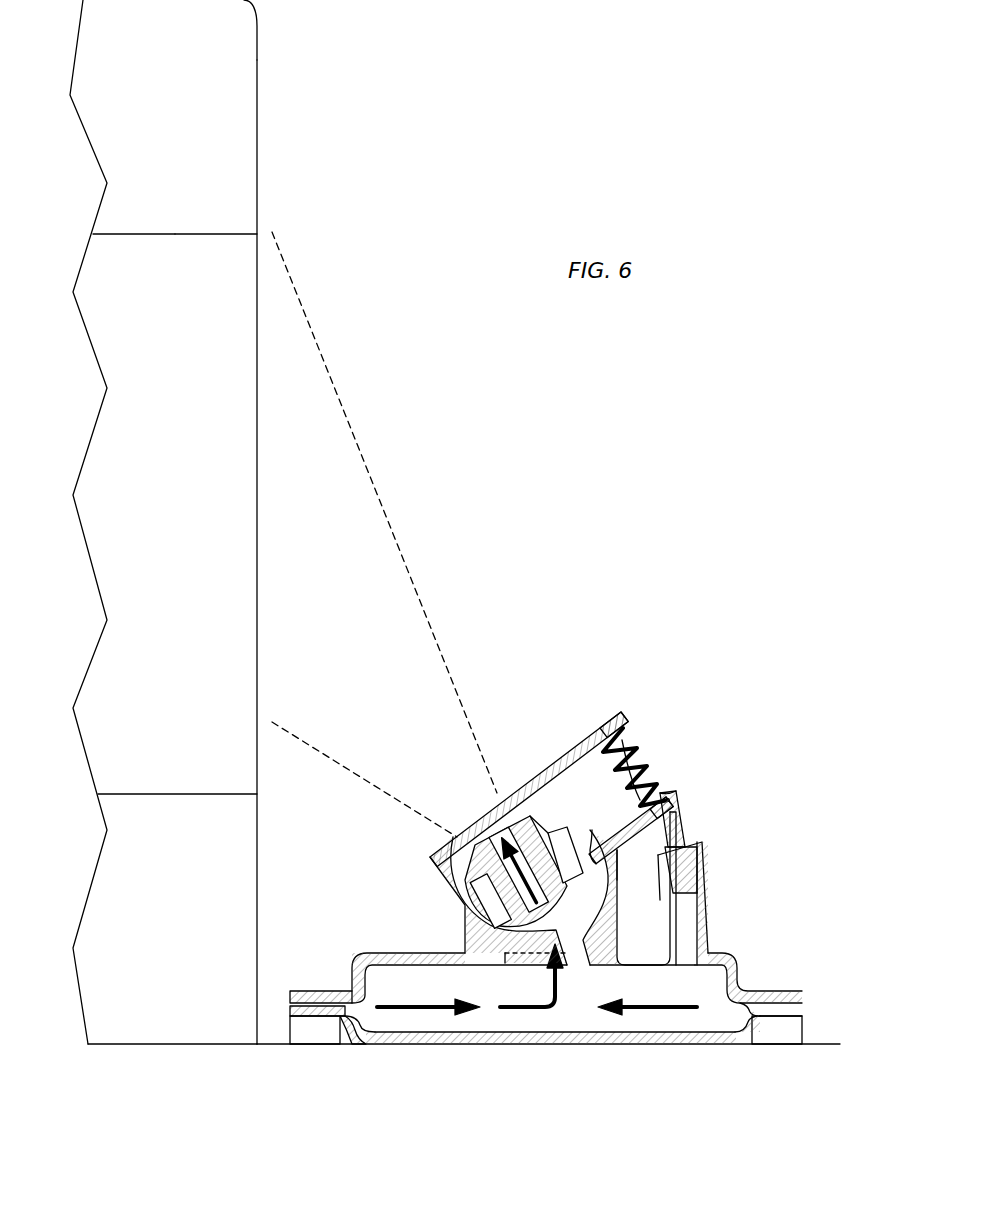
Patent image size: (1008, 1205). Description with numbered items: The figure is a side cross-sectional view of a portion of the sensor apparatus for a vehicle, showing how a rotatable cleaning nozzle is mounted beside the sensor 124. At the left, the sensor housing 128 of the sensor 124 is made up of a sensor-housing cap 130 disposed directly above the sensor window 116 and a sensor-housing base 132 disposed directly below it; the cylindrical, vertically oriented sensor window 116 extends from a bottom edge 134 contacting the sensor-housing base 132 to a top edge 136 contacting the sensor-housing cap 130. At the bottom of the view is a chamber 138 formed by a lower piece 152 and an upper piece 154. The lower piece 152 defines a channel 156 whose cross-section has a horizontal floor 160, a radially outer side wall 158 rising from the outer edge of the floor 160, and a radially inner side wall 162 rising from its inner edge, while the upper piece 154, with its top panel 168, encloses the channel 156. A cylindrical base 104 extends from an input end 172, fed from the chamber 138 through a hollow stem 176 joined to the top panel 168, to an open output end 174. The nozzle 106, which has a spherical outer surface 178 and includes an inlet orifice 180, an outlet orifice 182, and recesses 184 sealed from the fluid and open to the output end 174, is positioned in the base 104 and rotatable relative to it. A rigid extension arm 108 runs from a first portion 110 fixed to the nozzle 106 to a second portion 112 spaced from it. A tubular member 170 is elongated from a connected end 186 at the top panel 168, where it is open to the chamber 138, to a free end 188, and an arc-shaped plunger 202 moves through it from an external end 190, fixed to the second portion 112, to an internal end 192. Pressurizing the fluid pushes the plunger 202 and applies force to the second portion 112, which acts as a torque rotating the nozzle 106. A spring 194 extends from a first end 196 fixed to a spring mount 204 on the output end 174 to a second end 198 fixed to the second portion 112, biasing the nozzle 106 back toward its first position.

The base 104 is at (457, 867).
The nozzle 106 is at (520, 925).
The extension arm 108 is at (690, 822).
The first portion 110 is at (590, 838).
The second portion 112 is at (680, 790).
The sensor window 116 is at (228, 520).
The sensor 124 is at (257, 65).
The sensor housing 128 is at (143, 990).
The sensor-housing cap 130 is at (215, 153).
The sensor-housing base 132 is at (228, 843).
The bottom edge 134 is at (173, 792).
The top edge 136 is at (150, 236).
The chamber 138 is at (737, 957).
The lower piece 152 is at (315, 1016).
The upper piece 154 is at (300, 990).
The channel 156 is at (757, 1010).
The radially outer side wall 158 is at (760, 1013).
The floor 160 is at (470, 1046).
The radially inner side wall 162 is at (342, 1022).
The top panel 168 is at (632, 962).
The tubular member 170 is at (708, 880).
The input end 172 is at (610, 882).
The output end 174 is at (547, 812).
The hollow stem 176 is at (605, 938).
The outer surface 178 is at (590, 965).
The inlet orifice 180 is at (565, 952).
The outlet orifice 182 is at (523, 818).
The recess 184 is at (502, 810).
The connected end 186 is at (708, 953).
The free end 188 is at (700, 850).
The external end 190 is at (685, 800).
The internal end 192 is at (678, 897).
The spring 194 is at (650, 770).
The first end 196 is at (623, 726).
The second end 198 is at (668, 798).
The plunger 202 is at (705, 870).
The spring mount 204 is at (603, 728).